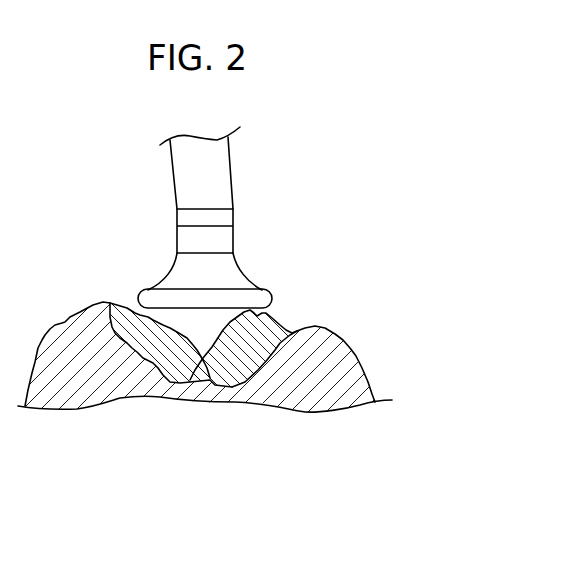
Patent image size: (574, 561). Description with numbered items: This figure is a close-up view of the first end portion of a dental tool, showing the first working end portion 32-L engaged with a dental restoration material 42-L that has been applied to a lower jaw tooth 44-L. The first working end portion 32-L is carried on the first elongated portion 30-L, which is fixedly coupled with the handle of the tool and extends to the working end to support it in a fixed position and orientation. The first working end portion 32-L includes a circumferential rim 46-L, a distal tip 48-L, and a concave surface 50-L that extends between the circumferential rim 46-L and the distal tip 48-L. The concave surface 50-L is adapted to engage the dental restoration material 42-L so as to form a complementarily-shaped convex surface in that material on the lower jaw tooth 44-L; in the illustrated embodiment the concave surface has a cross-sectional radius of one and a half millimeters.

The first elongated portion 30-L is at (231, 160).
The first working end portion 32-L is at (294, 248).
The circumferential rim 46-L is at (274, 298).
The dental restoration material 42-L is at (110, 304).
The lower jaw tooth 44-L is at (360, 361).
The distal tip 48-L is at (190, 380).
The concave surface 50-L is at (232, 349).